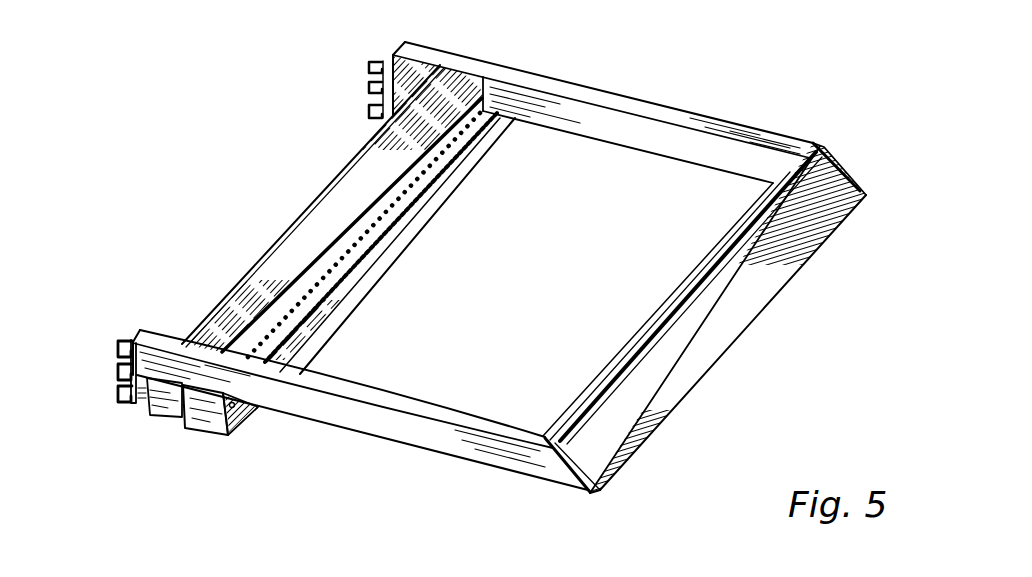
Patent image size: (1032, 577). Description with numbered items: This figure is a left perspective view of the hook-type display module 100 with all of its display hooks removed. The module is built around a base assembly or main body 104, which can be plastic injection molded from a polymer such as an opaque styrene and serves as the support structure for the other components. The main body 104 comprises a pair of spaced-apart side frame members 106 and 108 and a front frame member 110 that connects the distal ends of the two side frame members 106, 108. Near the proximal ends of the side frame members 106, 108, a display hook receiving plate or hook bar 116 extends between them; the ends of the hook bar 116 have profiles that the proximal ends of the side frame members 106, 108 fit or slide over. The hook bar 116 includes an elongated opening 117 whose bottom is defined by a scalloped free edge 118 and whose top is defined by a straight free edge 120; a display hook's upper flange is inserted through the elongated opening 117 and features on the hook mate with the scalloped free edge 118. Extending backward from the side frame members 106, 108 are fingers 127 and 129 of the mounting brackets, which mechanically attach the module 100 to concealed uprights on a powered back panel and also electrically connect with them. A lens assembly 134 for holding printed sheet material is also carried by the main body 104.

The hook-type display module 100 is at (767, 83).
The main body 104 is at (341, 428).
The side frame member 106 is at (640, 130).
The side frame member 108 is at (430, 433).
The front frame member 110 is at (645, 320).
The hook bar 116 is at (369, 294).
The elongated opening 117 is at (358, 249).
The scalloped free edge 118 is at (413, 193).
The straight free edge 120 is at (378, 206).
The fingers 127 is at (369, 110).
The fingers 129 is at (118, 392).
The lens assembly 134 is at (567, 474).